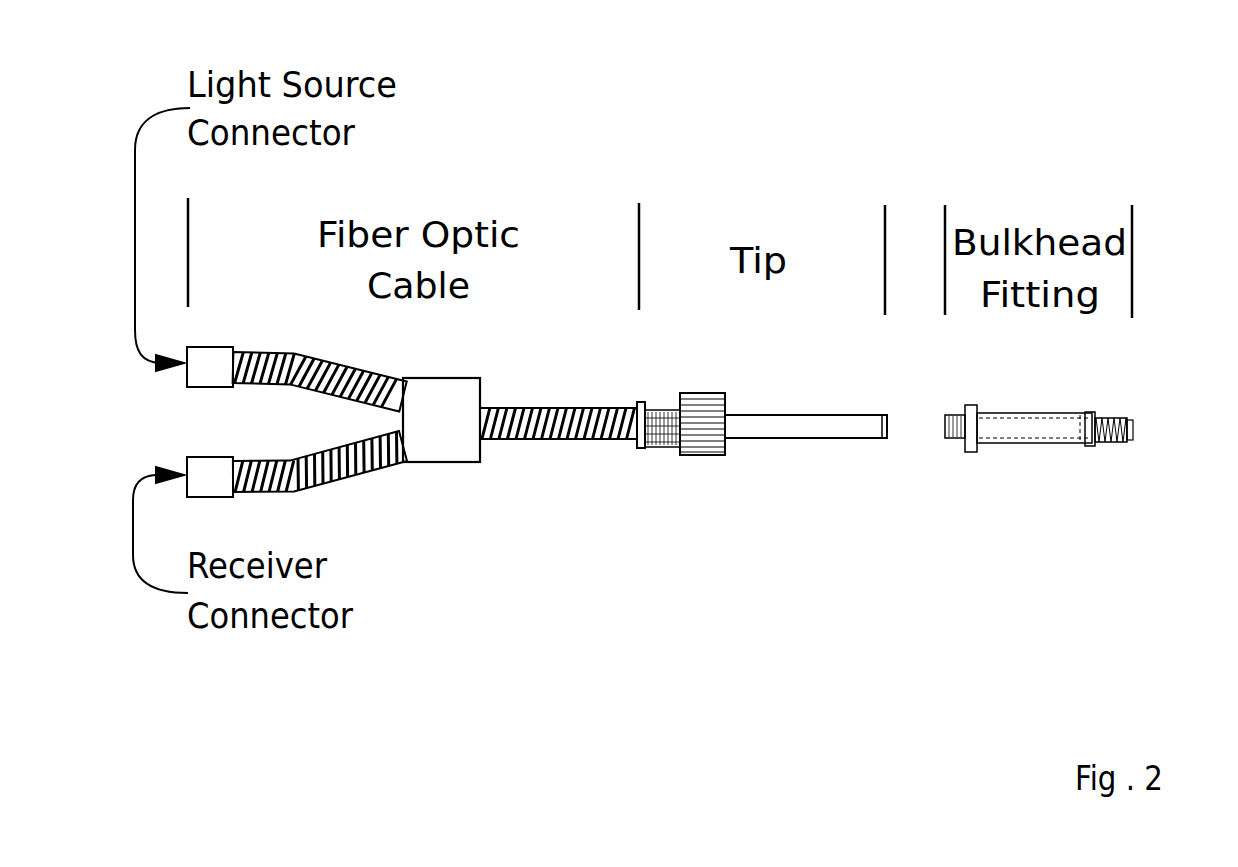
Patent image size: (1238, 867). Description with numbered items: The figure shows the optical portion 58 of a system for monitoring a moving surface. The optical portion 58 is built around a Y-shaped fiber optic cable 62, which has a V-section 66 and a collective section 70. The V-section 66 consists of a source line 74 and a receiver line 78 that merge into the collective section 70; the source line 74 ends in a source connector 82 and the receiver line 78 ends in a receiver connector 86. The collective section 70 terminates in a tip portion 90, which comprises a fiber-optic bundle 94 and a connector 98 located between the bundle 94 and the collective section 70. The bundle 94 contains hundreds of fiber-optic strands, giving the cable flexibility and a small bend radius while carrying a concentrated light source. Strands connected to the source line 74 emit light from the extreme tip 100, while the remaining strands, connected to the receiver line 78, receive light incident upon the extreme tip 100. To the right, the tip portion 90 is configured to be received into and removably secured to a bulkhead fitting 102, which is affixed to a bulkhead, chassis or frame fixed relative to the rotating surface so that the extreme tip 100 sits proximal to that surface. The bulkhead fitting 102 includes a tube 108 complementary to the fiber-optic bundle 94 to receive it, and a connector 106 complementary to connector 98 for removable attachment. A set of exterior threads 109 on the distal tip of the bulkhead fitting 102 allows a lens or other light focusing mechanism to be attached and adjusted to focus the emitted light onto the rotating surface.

The optical portion 58 is at (571, 522).
The Y-shaped fiber optic cable 62 is at (445, 500).
The V-section 66 is at (297, 438).
The collective section 70 is at (554, 465).
The source line 74 is at (253, 352).
The receiver line 78 is at (243, 493).
The source connector 82 is at (204, 347).
The receiver connector 86 is at (186, 497).
The tip portion 90 is at (796, 487).
The fiber-optic bundle 94 is at (813, 440).
The connector 98 is at (680, 448).
The extreme tip 100 is at (872, 440).
The bulkhead fitting 102 is at (1034, 462).
The connector 106 is at (953, 412).
The tube 108 is at (1028, 415).
The exterior threads 109 is at (1113, 417).